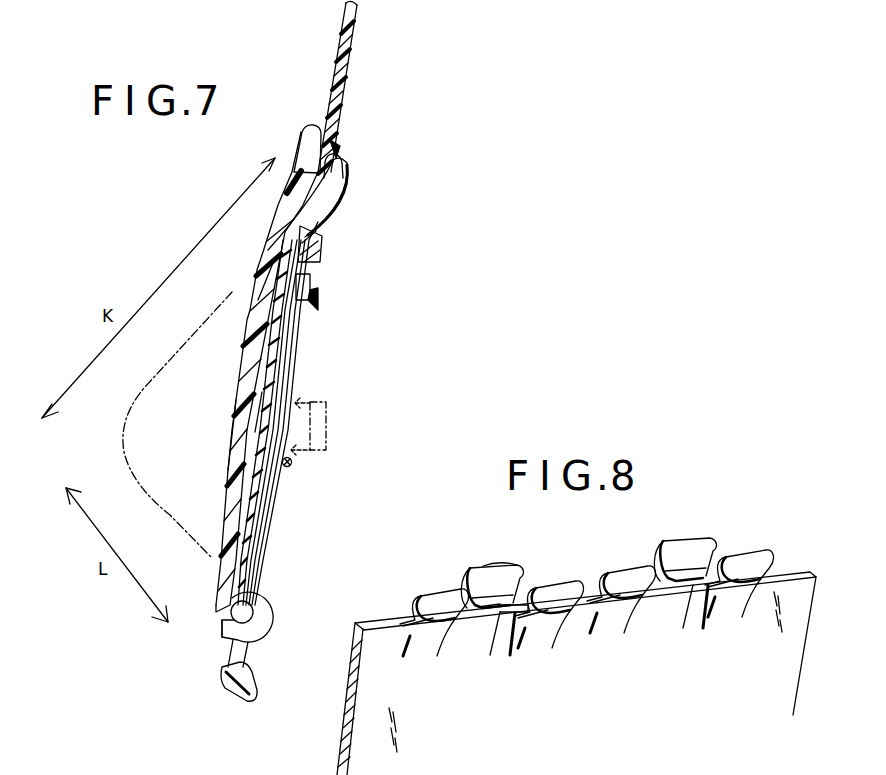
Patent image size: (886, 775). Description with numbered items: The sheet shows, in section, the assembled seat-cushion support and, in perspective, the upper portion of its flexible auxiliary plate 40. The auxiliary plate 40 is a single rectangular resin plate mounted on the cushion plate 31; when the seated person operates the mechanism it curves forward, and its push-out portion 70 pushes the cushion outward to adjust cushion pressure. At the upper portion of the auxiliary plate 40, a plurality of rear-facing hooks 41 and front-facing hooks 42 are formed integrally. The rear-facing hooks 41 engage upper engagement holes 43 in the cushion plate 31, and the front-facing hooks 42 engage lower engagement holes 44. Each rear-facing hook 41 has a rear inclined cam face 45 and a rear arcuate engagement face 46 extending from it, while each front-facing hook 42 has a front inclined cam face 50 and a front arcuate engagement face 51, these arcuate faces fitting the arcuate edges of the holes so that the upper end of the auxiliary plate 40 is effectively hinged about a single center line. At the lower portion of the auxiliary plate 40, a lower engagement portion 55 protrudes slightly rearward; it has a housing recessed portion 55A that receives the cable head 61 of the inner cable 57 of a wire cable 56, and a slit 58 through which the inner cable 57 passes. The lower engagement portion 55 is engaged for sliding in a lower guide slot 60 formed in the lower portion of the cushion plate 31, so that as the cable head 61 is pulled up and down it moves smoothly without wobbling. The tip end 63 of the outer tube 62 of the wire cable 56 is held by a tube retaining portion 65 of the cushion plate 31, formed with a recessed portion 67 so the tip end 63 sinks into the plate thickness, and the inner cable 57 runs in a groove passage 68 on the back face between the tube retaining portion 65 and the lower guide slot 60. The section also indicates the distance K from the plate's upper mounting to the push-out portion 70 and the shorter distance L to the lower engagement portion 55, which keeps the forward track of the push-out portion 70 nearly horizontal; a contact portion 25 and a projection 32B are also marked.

In FIG. 7, the contact portion 25 is at (328, 404).
In FIG. 7, the cushion plate 31 is at (344, 100).
In FIG. 7, the projection 32B is at (292, 463).
In FIG. 7, the auxiliary plate 40 is at (233, 320).
In FIG. 8, the auxiliary plate 40 is at (377, 603).
In FIG. 7, the rear-facing hook 41 is at (302, 138).
In FIG. 8, the rear-facing hook 41 is at (487, 565).
In FIG. 7, the front-facing hook 42 is at (344, 165).
In FIG. 8, the front-facing hook 42 is at (440, 590).
In FIG. 7, the upper engagement hole 43 is at (338, 148).
In FIG. 7, the lower engagement hole 44 is at (322, 218).
In FIG. 8, the rear inclined cam face 45 is at (505, 568).
In FIG. 8, the rear arcuate engagement face 46 is at (483, 607).
In FIG. 8, the front inclined cam face 50 is at (533, 577).
In FIG. 8, the front arcuate engagement face 51 is at (527, 612).
In FIG. 7, the lower engagement portion 55 is at (274, 608).
In FIG. 7, the housing recessed portion 55A is at (224, 621).
In FIG. 7, the wire cable 56 is at (294, 370).
In FIG. 7, the inner cable 57 is at (272, 502).
In FIG. 7, the slit 58 is at (262, 626).
In FIG. 7, the lower guide slot 60 is at (262, 545).
In FIG. 7, the cable head 61 is at (240, 613).
In FIG. 7, the outer tube 62 is at (318, 256).
In FIG. 7, the tip end 63 is at (318, 286).
In FIG. 7, the tube retaining portion 65 is at (322, 297).
In FIG. 7, the recessed portion 67 is at (292, 295).
In FIG. 7, the groove passage 68 is at (272, 384).
In FIG. 7, the push-out portion 70 is at (236, 432).